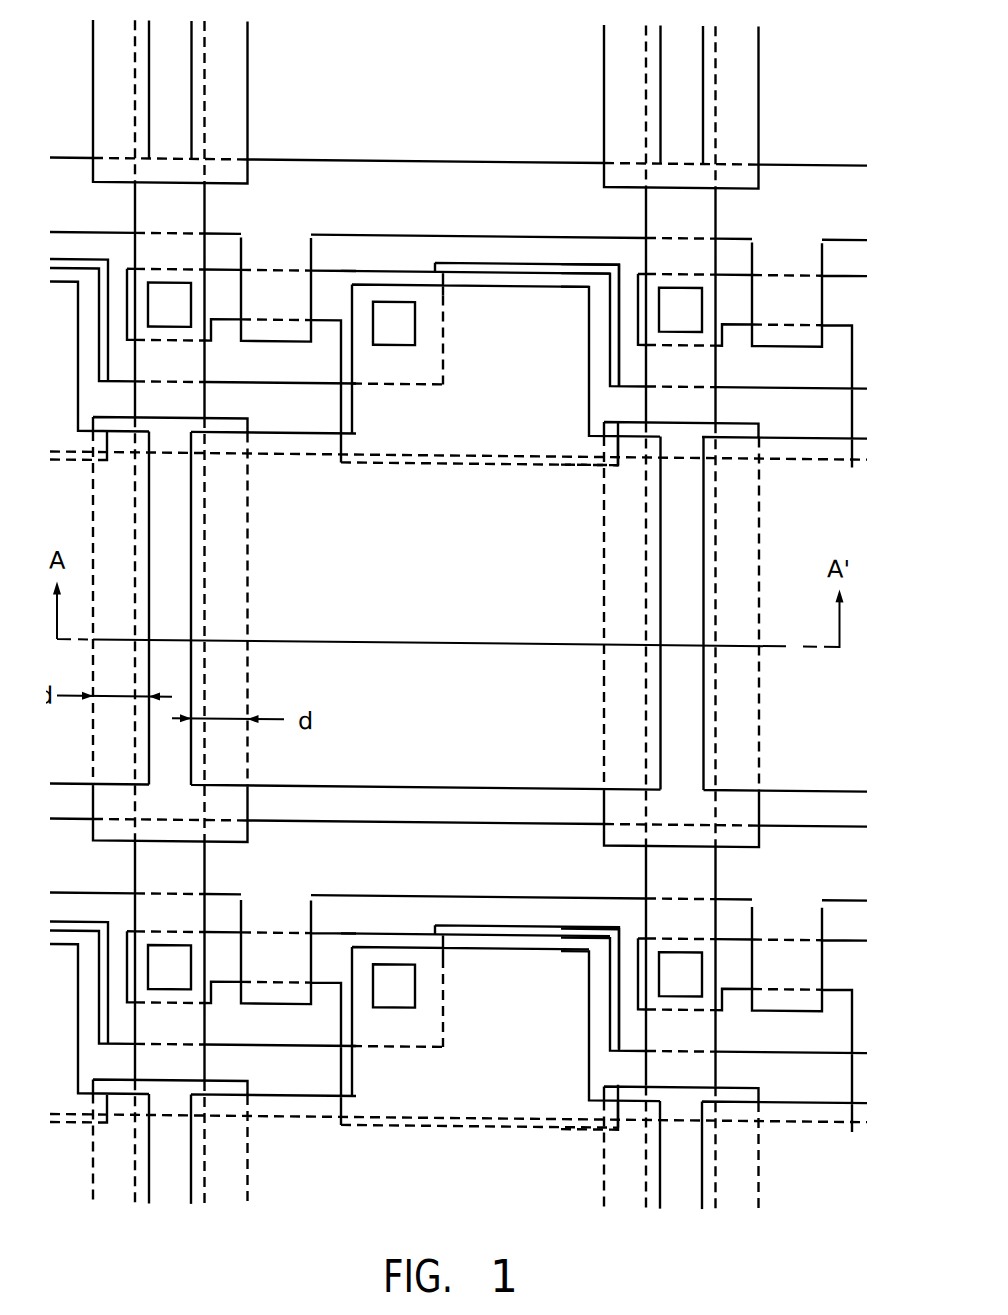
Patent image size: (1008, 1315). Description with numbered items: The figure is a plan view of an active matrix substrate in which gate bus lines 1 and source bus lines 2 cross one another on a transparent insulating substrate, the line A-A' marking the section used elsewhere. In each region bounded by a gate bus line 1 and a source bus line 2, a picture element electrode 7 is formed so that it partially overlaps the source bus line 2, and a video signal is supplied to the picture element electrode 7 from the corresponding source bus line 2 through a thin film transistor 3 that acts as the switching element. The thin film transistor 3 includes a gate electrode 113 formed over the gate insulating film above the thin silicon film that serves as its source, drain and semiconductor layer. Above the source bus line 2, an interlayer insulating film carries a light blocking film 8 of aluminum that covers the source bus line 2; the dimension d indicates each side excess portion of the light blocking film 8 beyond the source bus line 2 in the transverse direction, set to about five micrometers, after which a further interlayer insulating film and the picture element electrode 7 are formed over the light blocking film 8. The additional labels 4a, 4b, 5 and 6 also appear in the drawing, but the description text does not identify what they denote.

The gate bus line 1 is at (283, 173).
The source bus line 2 is at (193, 195).
The thin film transistor 3 is at (329, 280).
The contact hole 4a is at (158, 299).
The contact hole 4b is at (403, 325).
The semiconductor layer 5 is at (275, 416).
The storage capacitor electrode 6 is at (513, 296).
The picture element electrode 7 is at (458, 640).
The light blocking film 8 is at (107, 489).
The gate electrode 113 is at (298, 328).